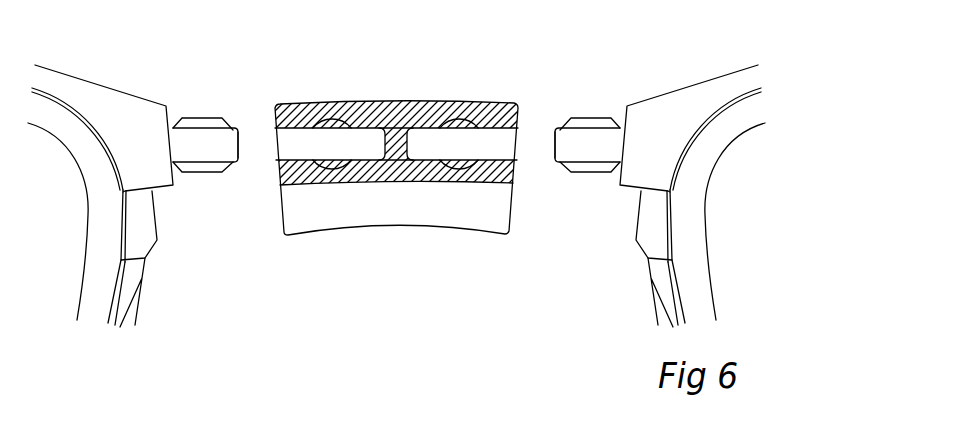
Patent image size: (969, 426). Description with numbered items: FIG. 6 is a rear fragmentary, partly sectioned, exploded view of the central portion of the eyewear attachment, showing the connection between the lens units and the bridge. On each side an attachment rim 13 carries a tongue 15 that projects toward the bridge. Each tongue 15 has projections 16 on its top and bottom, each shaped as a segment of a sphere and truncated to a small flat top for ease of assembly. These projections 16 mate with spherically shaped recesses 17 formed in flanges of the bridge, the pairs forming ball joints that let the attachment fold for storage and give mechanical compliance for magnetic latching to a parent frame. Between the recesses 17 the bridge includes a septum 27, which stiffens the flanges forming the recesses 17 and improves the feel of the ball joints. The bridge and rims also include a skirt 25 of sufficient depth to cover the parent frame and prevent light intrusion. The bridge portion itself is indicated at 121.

The attachment rim 13 is at (122, 90).
The tongue 15 is at (239, 140).
The projection 16 is at (230, 118).
The recess 17 is at (332, 122).
The skirt 25 is at (437, 221).
The septum 27 is at (415, 138).
The pad 121 is at (361, 246).